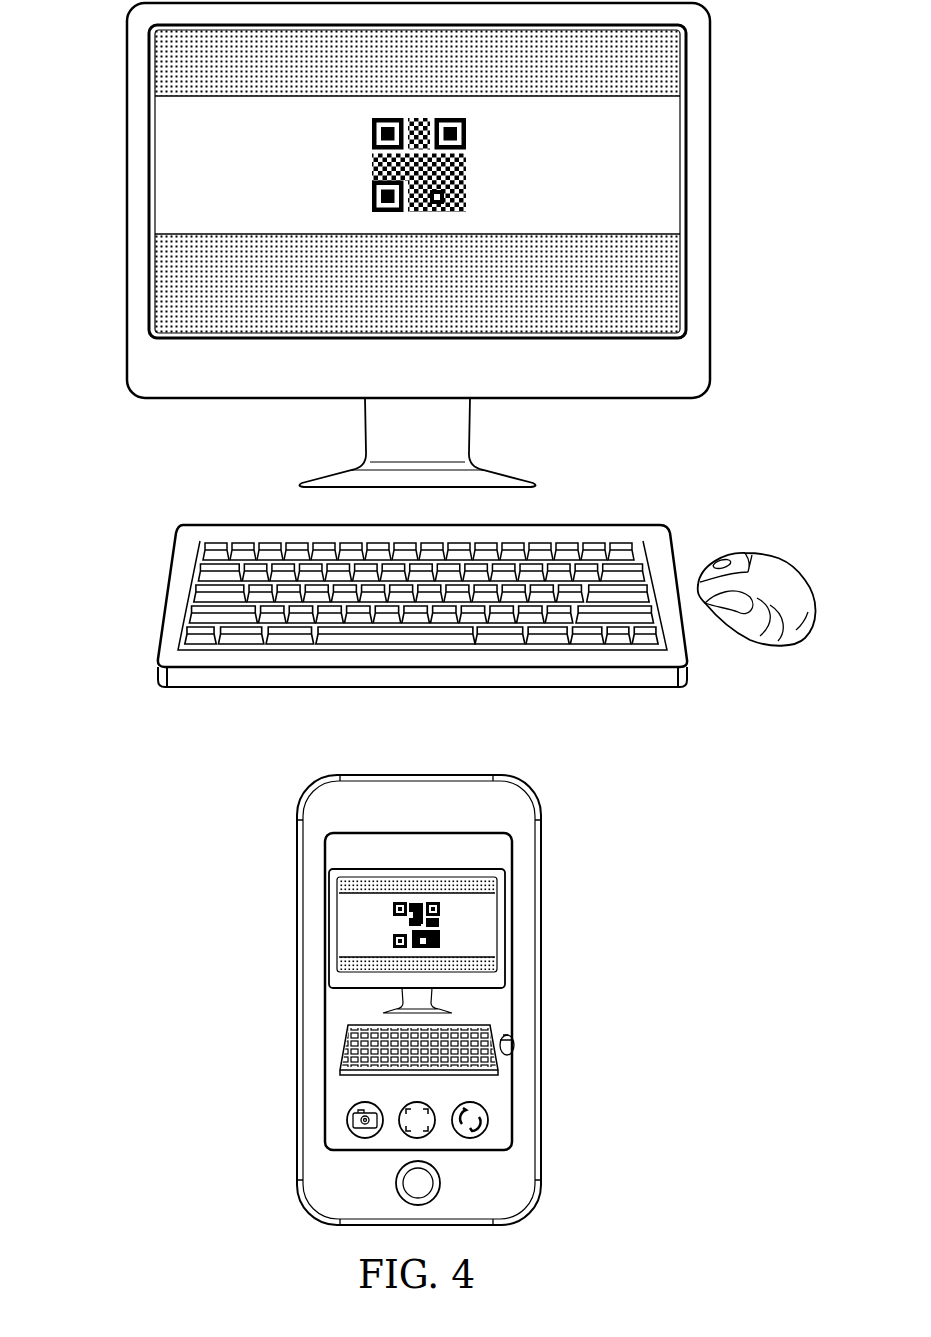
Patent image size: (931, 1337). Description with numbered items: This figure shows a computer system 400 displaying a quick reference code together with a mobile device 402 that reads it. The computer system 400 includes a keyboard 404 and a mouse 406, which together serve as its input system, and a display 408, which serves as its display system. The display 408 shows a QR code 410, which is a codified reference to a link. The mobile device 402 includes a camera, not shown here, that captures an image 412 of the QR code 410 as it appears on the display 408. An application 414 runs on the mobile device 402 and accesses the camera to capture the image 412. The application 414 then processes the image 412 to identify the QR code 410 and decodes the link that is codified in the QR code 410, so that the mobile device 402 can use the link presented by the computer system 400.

The computer system 400 is at (127, 200).
The mobile device 402 is at (297, 1000).
The keyboard 404 is at (249, 525).
The mouse 406 is at (780, 572).
The display 408 is at (168, 143).
The QR code 410 is at (476, 163).
The image 412 is at (498, 1013).
The application 414 is at (340, 1119).